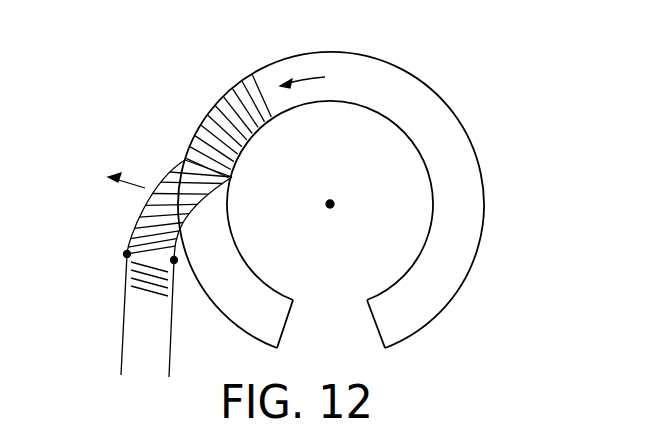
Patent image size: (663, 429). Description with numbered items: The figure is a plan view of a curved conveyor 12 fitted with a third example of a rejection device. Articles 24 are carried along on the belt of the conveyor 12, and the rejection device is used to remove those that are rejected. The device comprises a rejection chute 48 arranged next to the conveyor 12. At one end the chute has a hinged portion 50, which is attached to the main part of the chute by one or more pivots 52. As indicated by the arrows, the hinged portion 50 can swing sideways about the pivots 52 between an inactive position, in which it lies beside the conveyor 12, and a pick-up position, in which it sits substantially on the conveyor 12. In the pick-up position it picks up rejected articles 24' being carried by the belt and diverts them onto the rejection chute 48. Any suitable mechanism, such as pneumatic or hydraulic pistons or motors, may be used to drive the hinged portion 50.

The conveyor 12 is at (472, 203).
The articles 24 is at (255, 107).
The rejected articles 24' is at (120, 282).
The rejection chute 48 is at (135, 355).
The hinged portion 50 is at (165, 173).
The pivots 52 is at (124, 254).